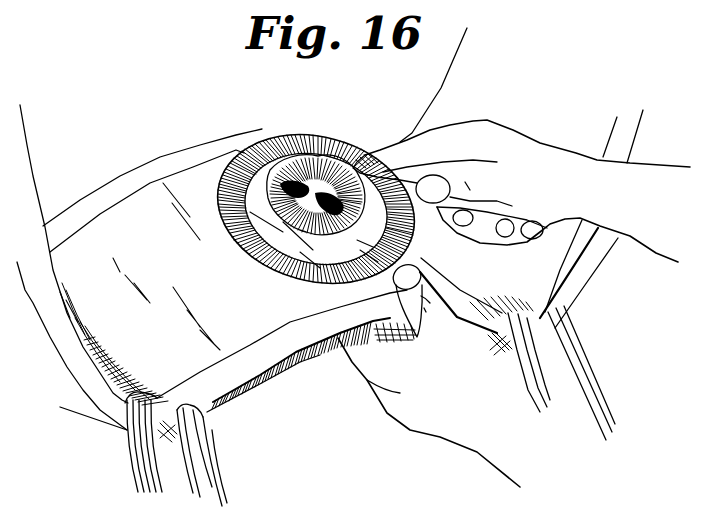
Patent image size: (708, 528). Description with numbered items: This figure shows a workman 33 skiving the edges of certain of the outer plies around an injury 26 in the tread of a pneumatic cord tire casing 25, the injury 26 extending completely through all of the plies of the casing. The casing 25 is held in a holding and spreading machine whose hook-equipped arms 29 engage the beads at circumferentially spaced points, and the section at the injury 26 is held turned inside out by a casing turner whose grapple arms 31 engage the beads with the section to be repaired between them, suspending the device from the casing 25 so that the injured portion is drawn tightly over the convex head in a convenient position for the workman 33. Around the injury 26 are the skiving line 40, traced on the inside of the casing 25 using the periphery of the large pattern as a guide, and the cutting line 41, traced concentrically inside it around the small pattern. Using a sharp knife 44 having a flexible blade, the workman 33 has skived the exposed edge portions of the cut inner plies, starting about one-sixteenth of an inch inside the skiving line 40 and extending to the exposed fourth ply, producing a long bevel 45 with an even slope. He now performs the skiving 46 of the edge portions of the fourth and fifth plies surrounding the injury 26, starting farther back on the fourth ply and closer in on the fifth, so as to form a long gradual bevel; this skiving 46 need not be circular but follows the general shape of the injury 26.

The pneumatic cord tire casing 25 is at (441, 71).
The injury 26 is at (283, 206).
The hook-equipped arms 29 is at (145, 450).
The grapple arms 31 is at (217, 466).
The workman 33 is at (527, 153).
The skiving line 40 is at (250, 252).
The cutting line 41 is at (280, 260).
The knife 44 is at (354, 172).
The bevel 45 is at (320, 250).
The skiving 46 is at (283, 177).